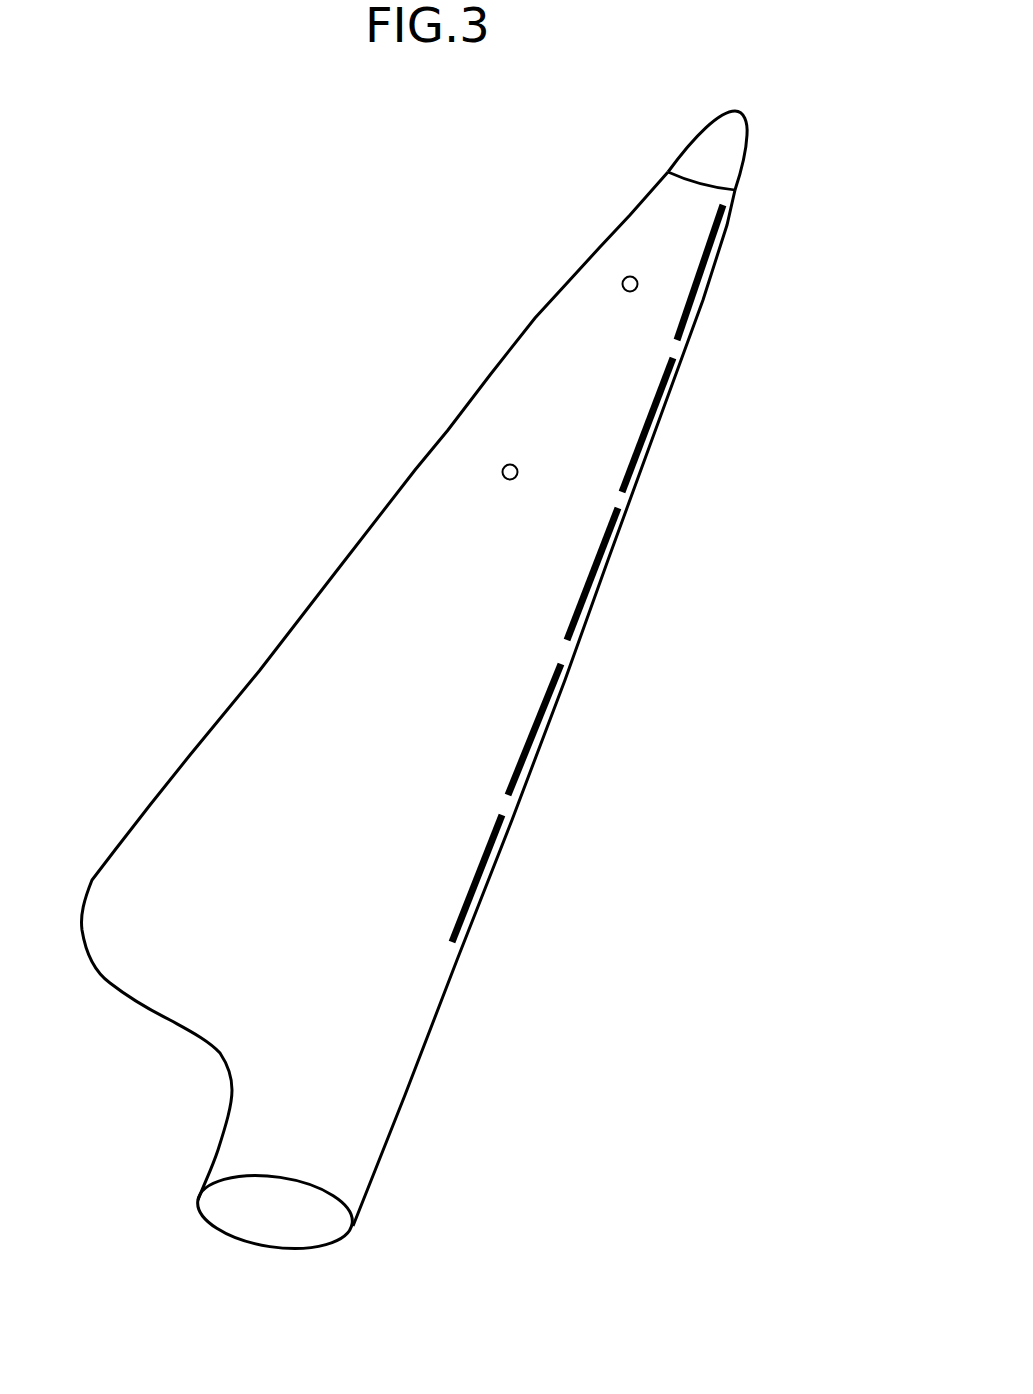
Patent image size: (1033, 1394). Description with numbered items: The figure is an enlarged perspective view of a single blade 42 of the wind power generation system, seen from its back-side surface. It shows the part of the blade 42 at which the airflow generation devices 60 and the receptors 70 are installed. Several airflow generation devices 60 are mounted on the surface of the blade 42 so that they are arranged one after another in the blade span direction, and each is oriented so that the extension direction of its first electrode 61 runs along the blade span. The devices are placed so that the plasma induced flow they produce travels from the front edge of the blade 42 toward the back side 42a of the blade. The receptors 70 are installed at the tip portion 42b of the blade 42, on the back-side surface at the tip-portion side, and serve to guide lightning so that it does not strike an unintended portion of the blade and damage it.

The blade 42 is at (436, 659).
The back side 42a is at (417, 574).
The tip portion 42b is at (737, 112).
The airflow generation device 60 is at (587, 573).
The first electrode 61 is at (473, 898).
The receptor 70 is at (722, 157).